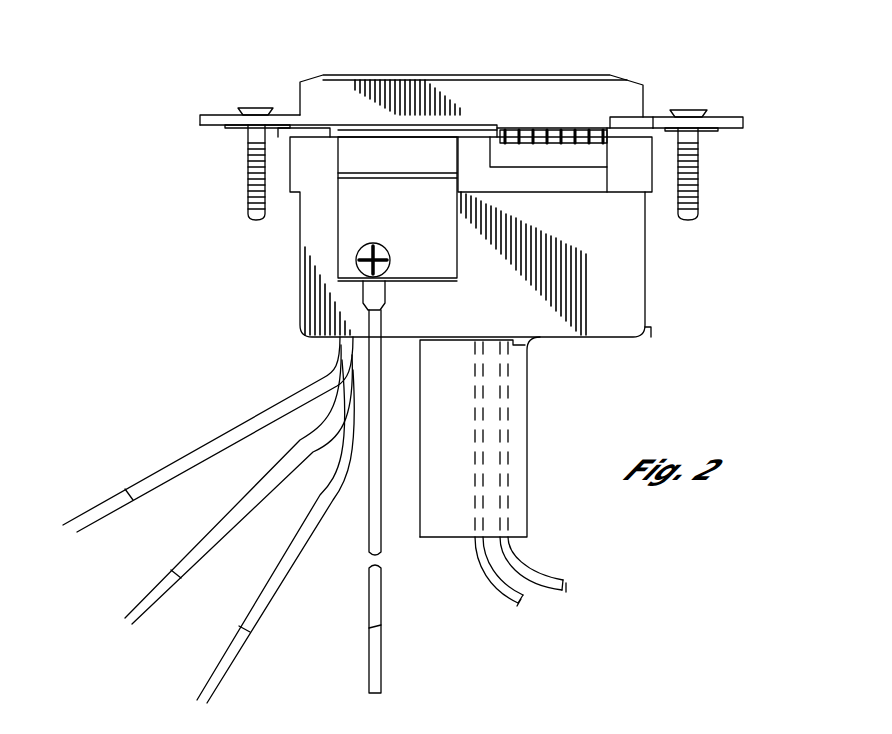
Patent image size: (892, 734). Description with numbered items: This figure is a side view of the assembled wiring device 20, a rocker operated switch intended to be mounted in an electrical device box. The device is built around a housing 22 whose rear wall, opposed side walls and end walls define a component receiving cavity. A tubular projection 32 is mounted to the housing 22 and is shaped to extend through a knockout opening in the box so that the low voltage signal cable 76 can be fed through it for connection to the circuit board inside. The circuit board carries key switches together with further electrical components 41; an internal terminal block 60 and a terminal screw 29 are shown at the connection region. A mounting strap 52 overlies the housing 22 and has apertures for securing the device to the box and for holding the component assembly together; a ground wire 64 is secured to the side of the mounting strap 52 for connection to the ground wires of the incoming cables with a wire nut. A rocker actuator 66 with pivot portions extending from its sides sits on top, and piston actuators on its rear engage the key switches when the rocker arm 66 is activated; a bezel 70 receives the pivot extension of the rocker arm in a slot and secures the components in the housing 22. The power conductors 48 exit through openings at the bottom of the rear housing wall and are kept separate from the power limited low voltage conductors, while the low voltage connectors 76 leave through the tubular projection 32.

The wiring device 20 is at (447, 351).
The housing 22 is at (645, 260).
The terminal screw 29 is at (423, 287).
The tubular projection 32 is at (517, 382).
The electrical components 41 is at (543, 140).
The power conductors 48 is at (247, 497).
The mounting strap 52 is at (733, 118).
The terminal block 60 is at (343, 222).
The ground wire 64 is at (368, 576).
The rocker actuator 66 is at (518, 73).
The bezel 70 is at (647, 85).
The low voltage connectors 76 is at (493, 577).